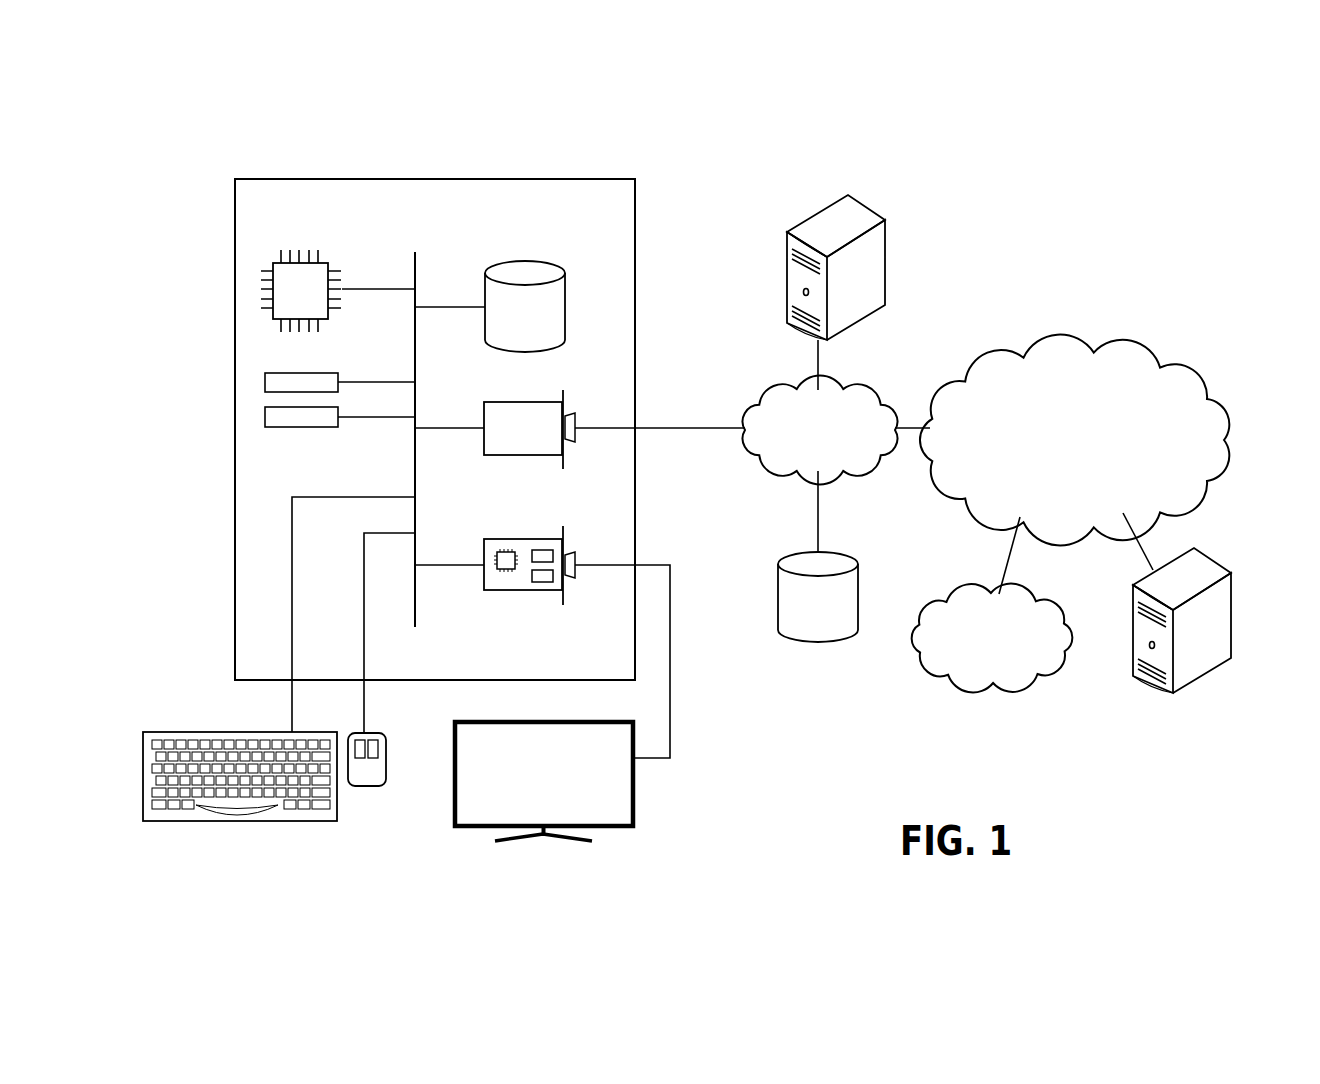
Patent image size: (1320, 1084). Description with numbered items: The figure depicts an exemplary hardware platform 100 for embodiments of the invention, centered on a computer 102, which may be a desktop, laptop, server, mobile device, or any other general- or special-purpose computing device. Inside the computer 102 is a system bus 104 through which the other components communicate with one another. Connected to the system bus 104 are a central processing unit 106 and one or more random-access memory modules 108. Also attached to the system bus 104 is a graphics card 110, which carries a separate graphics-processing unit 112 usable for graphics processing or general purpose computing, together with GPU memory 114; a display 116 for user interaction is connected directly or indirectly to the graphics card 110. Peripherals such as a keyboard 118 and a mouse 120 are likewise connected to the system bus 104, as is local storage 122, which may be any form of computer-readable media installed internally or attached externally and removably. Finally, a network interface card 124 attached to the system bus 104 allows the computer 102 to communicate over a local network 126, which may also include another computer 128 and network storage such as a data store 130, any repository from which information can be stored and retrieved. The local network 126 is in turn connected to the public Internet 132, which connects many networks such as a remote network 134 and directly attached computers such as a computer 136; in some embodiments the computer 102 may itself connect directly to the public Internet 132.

The computing system 100 is at (1164, 182).
The computer 102 is at (592, 178).
The system bus 104 is at (417, 258).
The central processing unit 106 is at (328, 258).
The random-access memory modules 108 is at (338, 415).
The graphics card 110 is at (557, 626).
The graphics-processing unit 112 is at (505, 572).
The GPU memory 114 is at (541, 580).
The display 116 is at (637, 808).
The keyboard 118 is at (243, 822).
The mouse 120 is at (366, 787).
The local storage 122 is at (568, 288).
The network interface card 124 is at (484, 409).
The local network 126 is at (873, 387).
The computer 128 is at (875, 207).
The data store 130 is at (850, 556).
The public Internet 132 is at (1120, 352).
The remote network 134 is at (1045, 596).
The computer 136 is at (1210, 556).